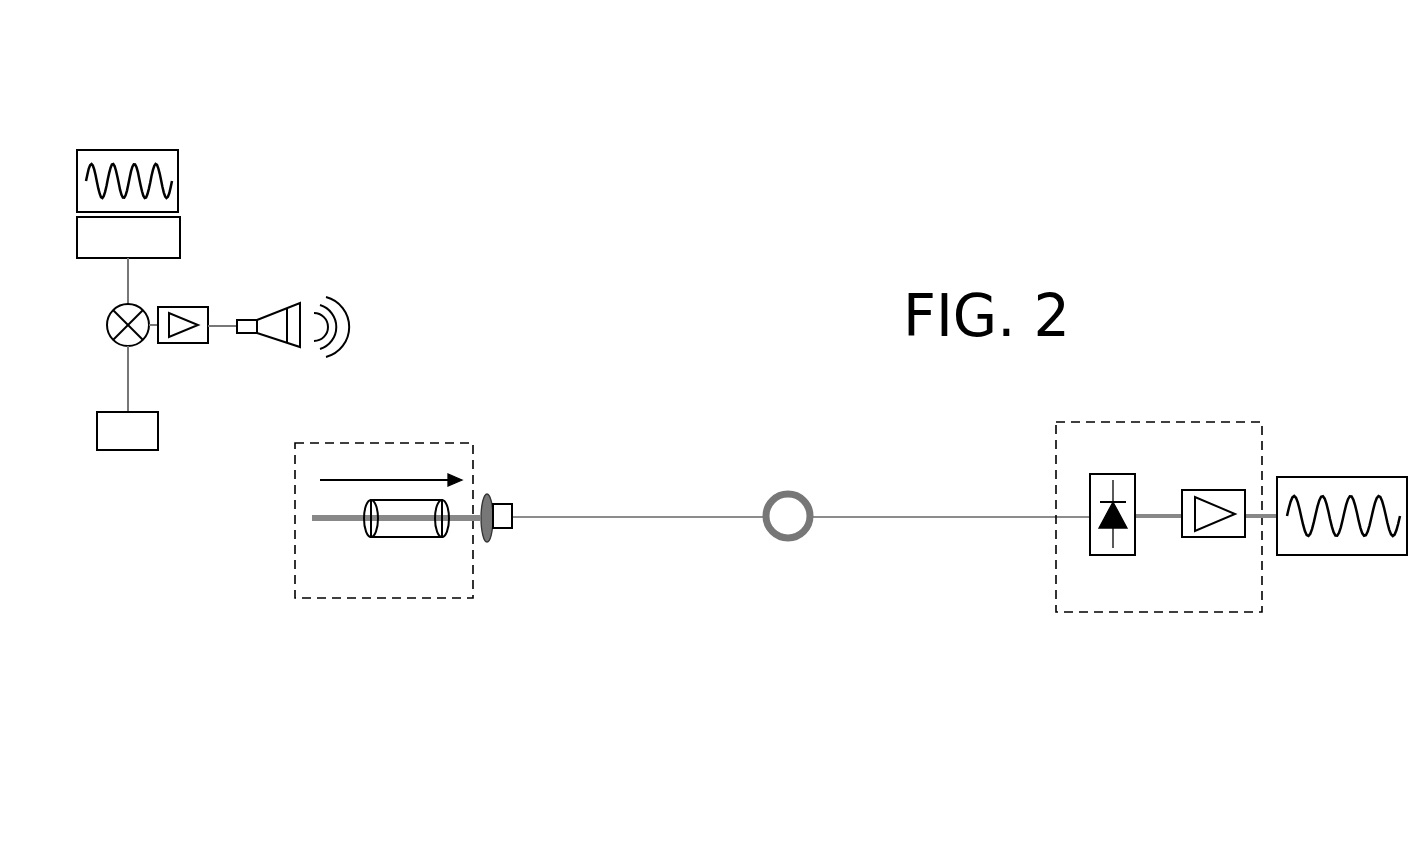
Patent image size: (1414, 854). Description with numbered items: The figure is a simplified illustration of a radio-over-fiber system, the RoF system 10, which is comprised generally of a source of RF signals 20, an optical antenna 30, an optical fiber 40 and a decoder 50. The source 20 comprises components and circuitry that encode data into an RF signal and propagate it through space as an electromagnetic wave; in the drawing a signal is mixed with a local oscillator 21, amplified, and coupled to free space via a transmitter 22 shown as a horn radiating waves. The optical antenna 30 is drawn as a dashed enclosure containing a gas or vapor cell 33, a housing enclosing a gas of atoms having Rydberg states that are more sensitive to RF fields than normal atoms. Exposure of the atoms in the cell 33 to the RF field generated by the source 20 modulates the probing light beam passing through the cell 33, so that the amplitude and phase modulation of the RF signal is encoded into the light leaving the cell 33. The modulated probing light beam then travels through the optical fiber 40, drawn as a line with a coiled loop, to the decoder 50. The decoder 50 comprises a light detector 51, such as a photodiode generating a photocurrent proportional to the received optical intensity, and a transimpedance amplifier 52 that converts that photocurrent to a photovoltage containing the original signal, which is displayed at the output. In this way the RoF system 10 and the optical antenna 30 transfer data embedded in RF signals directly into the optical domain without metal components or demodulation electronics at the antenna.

The RoF system 10 is at (592, 308).
The source of RF signals 20 is at (216, 306).
The local oscillator 21 is at (133, 452).
The transmitter 22 is at (295, 318).
The optical antenna 30 is at (403, 570).
The gas or vapor cell 33 is at (410, 537).
The optical fiber 40 is at (722, 520).
The decoder 50 is at (1163, 516).
The light detector 51 is at (1108, 555).
The transimpedance amplifier 52 is at (1193, 490).